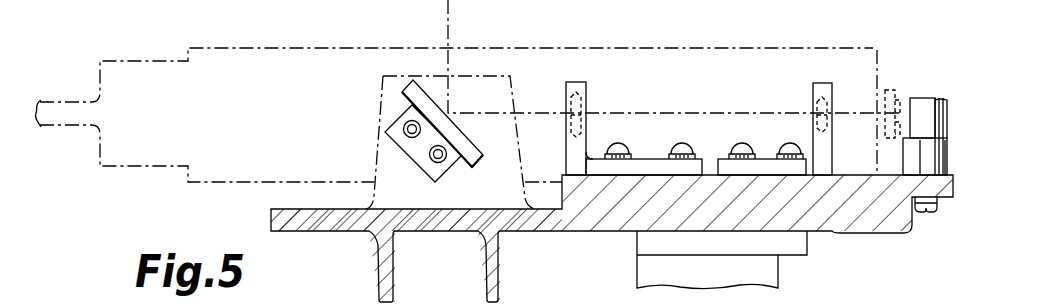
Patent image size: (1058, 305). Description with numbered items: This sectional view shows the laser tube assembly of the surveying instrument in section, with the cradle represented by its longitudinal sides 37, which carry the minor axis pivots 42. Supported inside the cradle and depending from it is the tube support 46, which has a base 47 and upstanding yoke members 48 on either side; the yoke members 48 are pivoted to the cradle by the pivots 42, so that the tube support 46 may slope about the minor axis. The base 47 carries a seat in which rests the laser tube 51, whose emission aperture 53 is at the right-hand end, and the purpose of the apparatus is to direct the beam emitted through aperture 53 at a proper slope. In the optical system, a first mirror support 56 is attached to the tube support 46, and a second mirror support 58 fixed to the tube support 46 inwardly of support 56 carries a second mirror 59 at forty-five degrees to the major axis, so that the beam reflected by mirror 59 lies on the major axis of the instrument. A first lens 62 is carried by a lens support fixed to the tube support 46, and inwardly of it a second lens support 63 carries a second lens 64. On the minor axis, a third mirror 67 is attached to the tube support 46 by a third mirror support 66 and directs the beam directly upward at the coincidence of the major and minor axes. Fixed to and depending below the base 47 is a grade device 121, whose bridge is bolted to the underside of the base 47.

The longitudinal sides 37 is at (416, 257).
The minor axis pivots 42 is at (407, 268).
The upstanding yoke members 48 is at (510, 268).
The tube support 46 is at (611, 235).
The base 47 is at (560, 232).
The grade device 121 is at (786, 267).
The laser tube 51 is at (745, 50).
The emission aperture 53 is at (890, 88).
The first mirror support 56 is at (822, 83).
The first lens 62 is at (812, 108).
The second lens support 63 is at (577, 84).
The second lens 64 is at (590, 102).
The third mirror support 66 is at (377, 161).
The third mirror 67 is at (428, 82).
The second mirror support 58 is at (923, 105).
The second mirror 59 is at (940, 108).